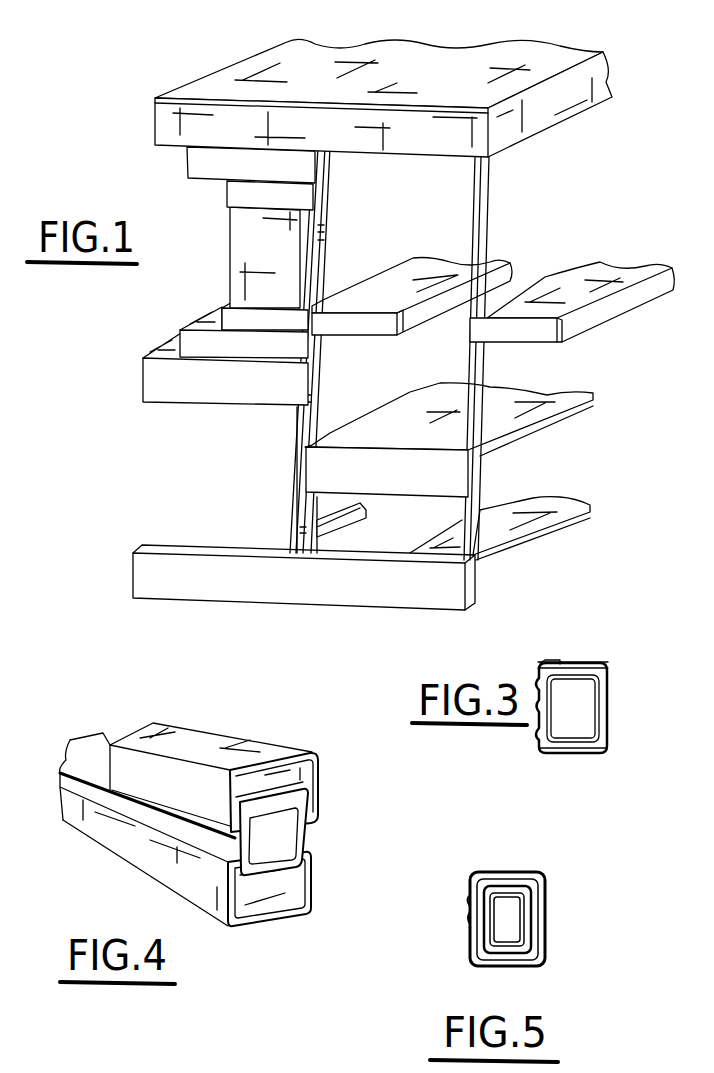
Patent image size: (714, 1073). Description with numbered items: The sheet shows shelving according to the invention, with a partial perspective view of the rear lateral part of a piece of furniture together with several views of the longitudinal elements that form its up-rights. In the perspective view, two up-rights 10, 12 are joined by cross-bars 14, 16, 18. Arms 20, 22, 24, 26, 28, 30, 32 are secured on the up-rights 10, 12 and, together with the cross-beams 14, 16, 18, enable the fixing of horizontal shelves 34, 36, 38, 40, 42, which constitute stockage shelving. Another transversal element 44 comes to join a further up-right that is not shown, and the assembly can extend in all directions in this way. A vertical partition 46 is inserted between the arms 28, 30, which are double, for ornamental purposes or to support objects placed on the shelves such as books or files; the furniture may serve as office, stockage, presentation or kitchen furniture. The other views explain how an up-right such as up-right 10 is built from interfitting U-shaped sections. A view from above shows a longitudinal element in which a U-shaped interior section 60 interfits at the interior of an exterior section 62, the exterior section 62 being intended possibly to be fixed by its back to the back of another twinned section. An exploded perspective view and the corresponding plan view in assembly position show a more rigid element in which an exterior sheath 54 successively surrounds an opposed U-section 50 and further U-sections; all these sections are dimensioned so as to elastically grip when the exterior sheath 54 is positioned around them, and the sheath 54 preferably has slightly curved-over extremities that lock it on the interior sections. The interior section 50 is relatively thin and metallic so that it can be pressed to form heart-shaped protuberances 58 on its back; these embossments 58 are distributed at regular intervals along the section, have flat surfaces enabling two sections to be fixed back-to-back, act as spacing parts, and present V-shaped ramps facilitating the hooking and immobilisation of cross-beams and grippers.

In FIG. 1, the up-right 10 is at (292, 483).
In FIG. 1, the up-right 12 is at (492, 213).
In FIG. 1, the cross-bar 14 is at (378, 590).
In FIG. 1, the cross-bar 16 is at (455, 478).
In FIG. 1, the cross-bar 18 is at (430, 146).
In FIG. 1, the arm 20 is at (382, 328).
In FIG. 1, the arm 22 is at (522, 335).
In FIG. 1, the arm 24 is at (218, 393).
In FIG. 1, the arm 26 is at (192, 342).
In FIG. 1, the arm 28 is at (222, 318).
In FIG. 1, the arm 30 is at (228, 195).
In FIG. 1, the arm 32 is at (188, 163).
In FIG. 1, the horizontal shelf 34 is at (468, 57).
In FIG. 1, the horizontal shelf 36 is at (562, 277).
In FIG. 1, the horizontal shelf 38 is at (409, 266).
In FIG. 1, the horizontal shelf 40 is at (548, 418).
In FIG. 1, the horizontal shelf 42 is at (508, 537).
In FIG. 1, the transversal element 44 is at (360, 512).
In FIG. 1, the vertical partition 46 is at (240, 247).
In FIG. 4, the U-shaped section 50 is at (313, 887).
In FIG. 5, the U-shaped section 50 is at (470, 940).
In FIG. 1, the exterior sheath 54 is at (318, 395).
In FIG. 4, the exterior sheath 54 is at (297, 712).
In FIG. 5, the exterior sheath 54 is at (493, 870).
In FIG. 1, the heart-shaped protuberance 58 is at (327, 222).
In FIG. 3, the heart-shaped protuberance 58 is at (532, 686).
In FIG. 5, the heart-shaped protuberance 58 is at (468, 906).
In FIG. 3, the U-shaped interior section 60 is at (614, 704).
In FIG. 3, the exterior section 62 is at (553, 663).